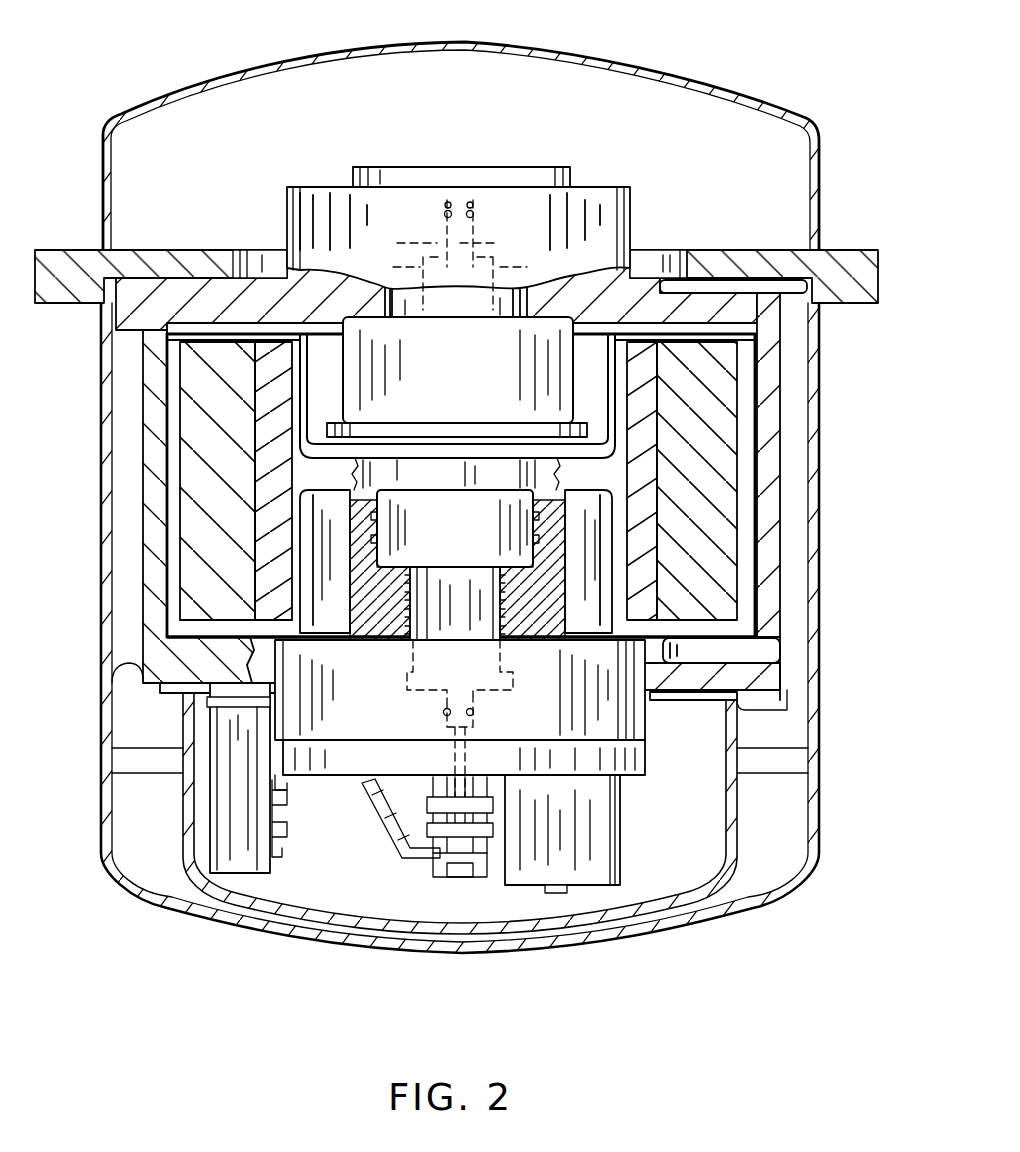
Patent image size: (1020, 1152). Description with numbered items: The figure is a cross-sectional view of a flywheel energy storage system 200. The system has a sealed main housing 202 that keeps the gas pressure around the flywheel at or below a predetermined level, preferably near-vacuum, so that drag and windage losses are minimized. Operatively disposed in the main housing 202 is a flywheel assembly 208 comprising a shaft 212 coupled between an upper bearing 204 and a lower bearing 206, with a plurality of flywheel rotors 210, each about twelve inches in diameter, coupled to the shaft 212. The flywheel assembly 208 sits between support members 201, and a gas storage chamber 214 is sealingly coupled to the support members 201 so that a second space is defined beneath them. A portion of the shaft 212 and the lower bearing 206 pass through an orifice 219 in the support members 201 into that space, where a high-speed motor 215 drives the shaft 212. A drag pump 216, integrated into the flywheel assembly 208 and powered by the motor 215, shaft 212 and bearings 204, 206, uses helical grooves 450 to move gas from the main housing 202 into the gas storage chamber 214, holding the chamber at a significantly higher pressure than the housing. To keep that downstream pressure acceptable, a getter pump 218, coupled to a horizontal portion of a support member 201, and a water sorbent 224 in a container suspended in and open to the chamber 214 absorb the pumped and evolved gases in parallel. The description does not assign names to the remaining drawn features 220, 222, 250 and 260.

The flywheel energy storage system 200 is at (451, 500).
The support members 201 is at (118, 680).
The main housing 202 is at (562, 46).
The upper bearing 204 is at (487, 210).
The lower bearing 206 is at (444, 713).
The flywheel assembly 208 is at (740, 492).
The flywheel rotors 210 is at (193, 525).
The shaft 212 is at (452, 587).
The gas storage chamber 214 is at (803, 884).
The high-speed motor 215 is at (470, 296).
The drag pump 216 is at (535, 600).
The getter pump 218 is at (494, 847).
The orifice 219 is at (412, 680).
The pump housing 220 is at (622, 817).
The pump outlet 222 is at (548, 890).
The water sorbent 224 is at (227, 813).
The upper chamber 250 is at (680, 124).
The oil sump liner 260 is at (370, 907).
The helical grooves 450 is at (540, 520).